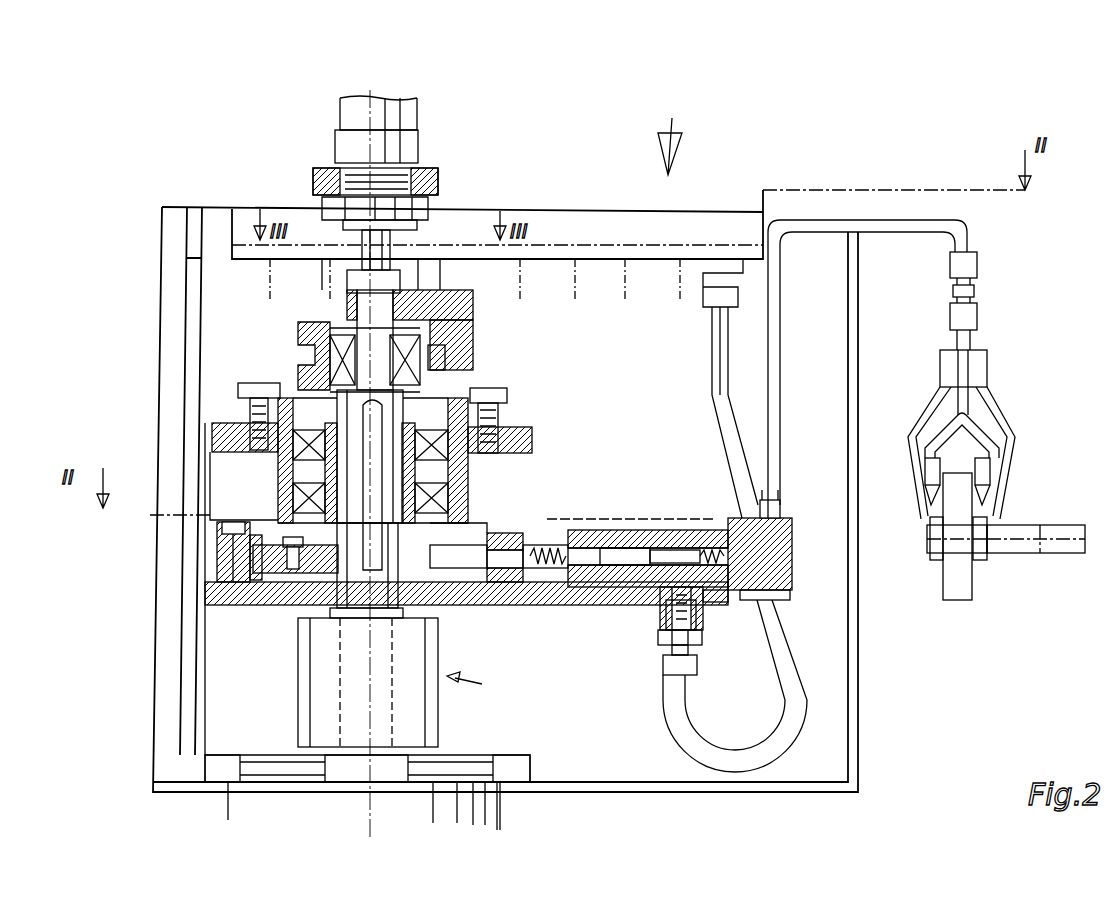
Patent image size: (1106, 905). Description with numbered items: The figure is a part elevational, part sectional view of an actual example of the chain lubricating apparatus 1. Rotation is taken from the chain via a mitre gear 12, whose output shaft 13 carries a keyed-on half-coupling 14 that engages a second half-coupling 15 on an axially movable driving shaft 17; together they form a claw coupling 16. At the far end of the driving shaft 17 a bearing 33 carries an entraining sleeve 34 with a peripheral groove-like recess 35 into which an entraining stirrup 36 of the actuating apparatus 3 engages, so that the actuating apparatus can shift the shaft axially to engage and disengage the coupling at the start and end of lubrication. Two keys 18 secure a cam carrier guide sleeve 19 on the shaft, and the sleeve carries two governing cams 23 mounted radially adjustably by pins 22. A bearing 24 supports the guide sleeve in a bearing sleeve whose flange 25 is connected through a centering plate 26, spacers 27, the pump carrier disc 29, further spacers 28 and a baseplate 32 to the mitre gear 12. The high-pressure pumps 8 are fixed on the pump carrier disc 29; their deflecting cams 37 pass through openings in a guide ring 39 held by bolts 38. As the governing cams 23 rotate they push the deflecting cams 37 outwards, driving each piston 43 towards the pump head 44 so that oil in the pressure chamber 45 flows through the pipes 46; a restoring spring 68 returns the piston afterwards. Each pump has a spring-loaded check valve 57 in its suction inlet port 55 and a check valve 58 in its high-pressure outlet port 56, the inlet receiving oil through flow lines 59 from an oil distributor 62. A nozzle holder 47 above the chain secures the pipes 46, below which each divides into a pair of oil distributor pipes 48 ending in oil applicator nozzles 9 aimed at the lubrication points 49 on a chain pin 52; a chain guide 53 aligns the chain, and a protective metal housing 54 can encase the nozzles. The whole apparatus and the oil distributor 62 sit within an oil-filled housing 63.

The chain lubricating apparatus 1 is at (675, 137).
The actuating apparatus 3 is at (417, 133).
The high-pressure pump 8 is at (640, 530).
The oil applicator nozzle 9 is at (990, 490).
The mitre gear 12 is at (478, 803).
The shaft 13 is at (350, 765).
The half-coupling 14 is at (415, 702).
The second half-coupling 15 is at (430, 642).
The claw coupling 16 is at (476, 684).
The driving shaft 17 is at (360, 575).
The key 18 is at (410, 410).
The cam carrier guide sleeve 19 is at (432, 543).
The pin 22 is at (268, 520).
The governing cam 23 is at (245, 578).
The bearing 24 is at (445, 468).
The flange 25 is at (505, 410).
The centering plate 26 is at (532, 432).
The spacer 27 is at (230, 468).
The further spacer 28 is at (240, 710).
The pump carrier disc 29 is at (450, 605).
The baseplate 32 is at (518, 770).
The bearing 33 is at (330, 360).
The entraining sleeve 34 is at (447, 350).
The peripheral groove-like recess 35 is at (308, 345).
The entraining stirrup 36 is at (462, 333).
The deflecting cam 37 is at (500, 545).
The bolt 38 is at (222, 520).
The guide ring 39 is at (503, 586).
The piston 43 is at (612, 565).
The pump head 44 is at (792, 560).
The pressure chamber 45 is at (665, 548).
The pipe 46 is at (962, 226).
The nozzle holder 47 is at (975, 355).
The oil distributor pipe 48 is at (943, 421).
The lubrication point 49 is at (945, 556).
The chain pin 52 is at (930, 540).
The chain guide 53 is at (950, 578).
The protective metal housing 54 is at (1010, 420).
The suction inlet port 55 is at (700, 600).
The high-pressure outlet port 56 is at (768, 595).
The check valve 57 is at (668, 602).
The check valve 58 is at (740, 605).
The flow line 59 is at (800, 742).
The oil distributor 62 is at (676, 226).
The oil-filled housing 63 is at (858, 776).
The restoring spring 68 is at (550, 568).